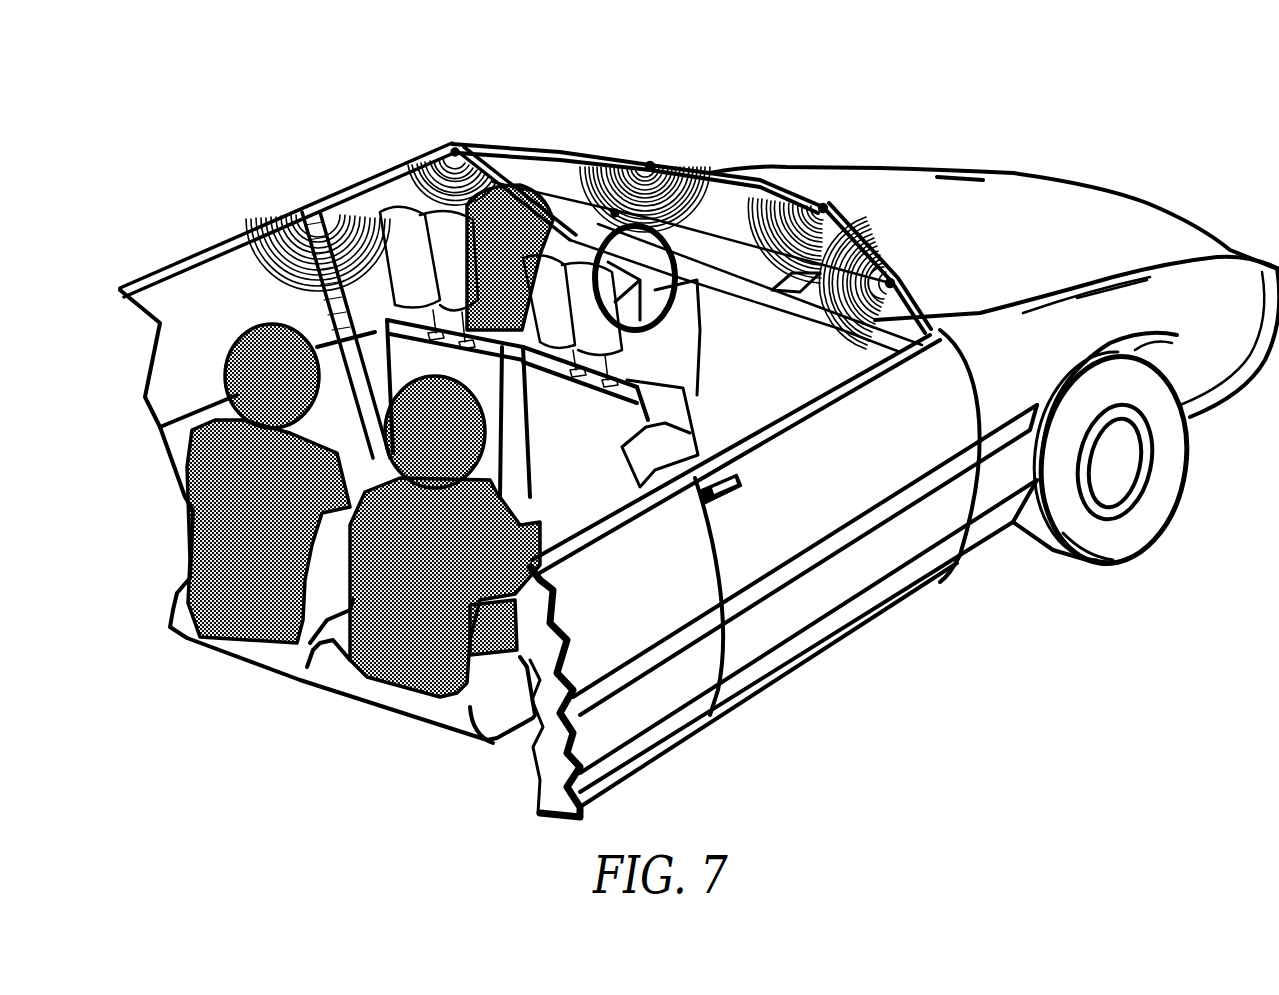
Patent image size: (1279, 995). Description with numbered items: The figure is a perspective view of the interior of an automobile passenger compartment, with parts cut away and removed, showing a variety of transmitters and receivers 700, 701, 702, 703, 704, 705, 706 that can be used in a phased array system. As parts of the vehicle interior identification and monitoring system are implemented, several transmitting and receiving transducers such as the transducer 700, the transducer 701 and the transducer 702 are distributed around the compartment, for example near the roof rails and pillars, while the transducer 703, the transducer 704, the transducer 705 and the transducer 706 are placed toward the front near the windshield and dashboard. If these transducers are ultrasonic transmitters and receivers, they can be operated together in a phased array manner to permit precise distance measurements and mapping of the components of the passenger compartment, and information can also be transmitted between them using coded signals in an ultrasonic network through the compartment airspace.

The transmitter and receiver 700 is at (263, 240).
The transmitter and receiver 701 is at (370, 205).
The transmitter and receiver 702 is at (450, 152).
The transmitter and receiver 703 is at (615, 213).
The transmitter and receiver 704 is at (653, 166).
The transmitter and receiver 705 is at (812, 215).
The transmitter and receiver 706 is at (903, 270).